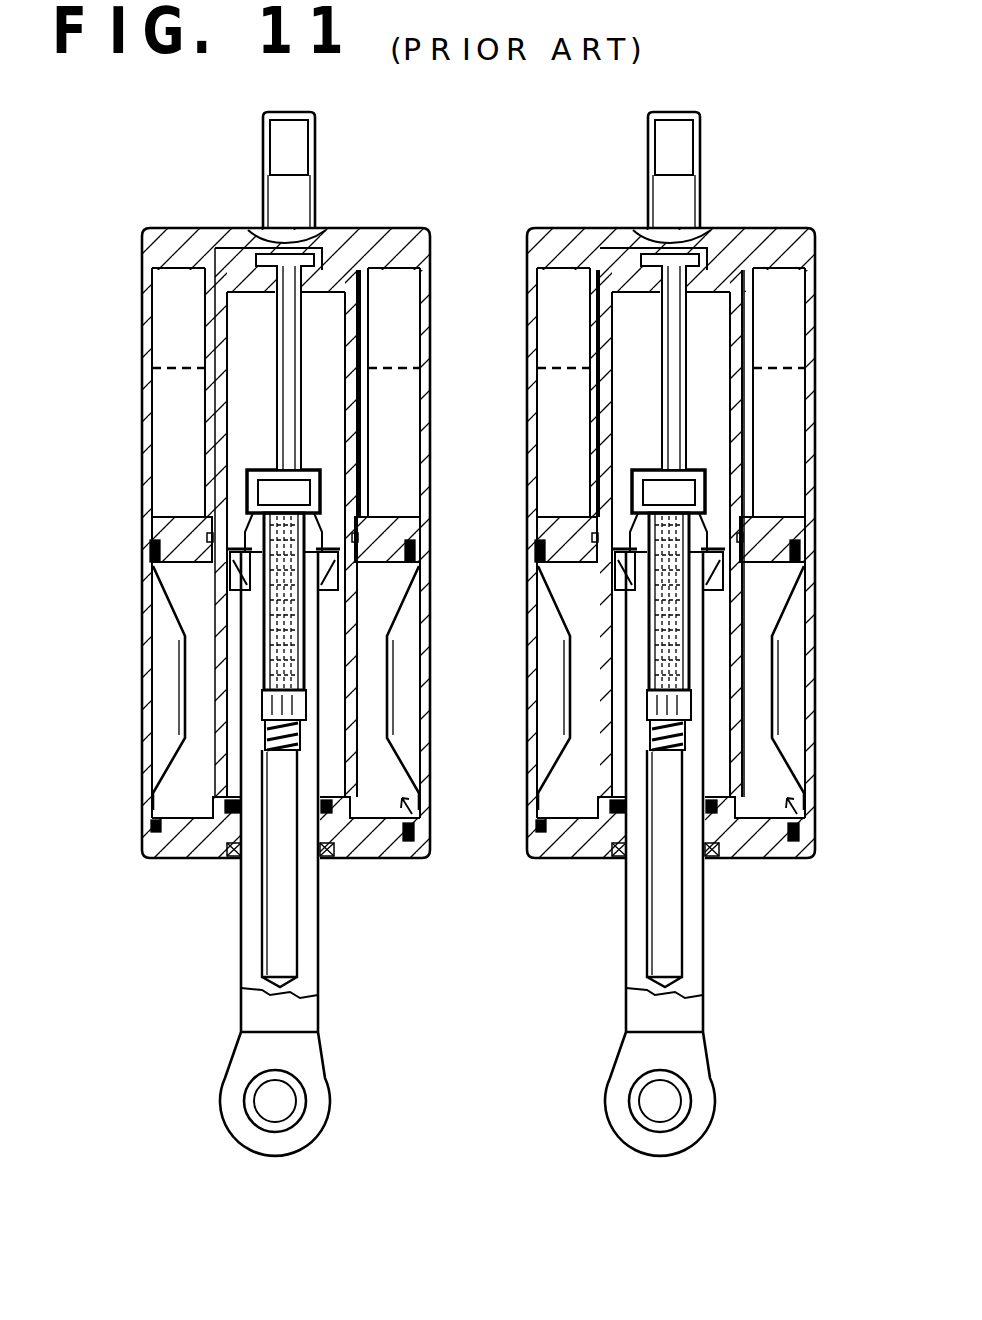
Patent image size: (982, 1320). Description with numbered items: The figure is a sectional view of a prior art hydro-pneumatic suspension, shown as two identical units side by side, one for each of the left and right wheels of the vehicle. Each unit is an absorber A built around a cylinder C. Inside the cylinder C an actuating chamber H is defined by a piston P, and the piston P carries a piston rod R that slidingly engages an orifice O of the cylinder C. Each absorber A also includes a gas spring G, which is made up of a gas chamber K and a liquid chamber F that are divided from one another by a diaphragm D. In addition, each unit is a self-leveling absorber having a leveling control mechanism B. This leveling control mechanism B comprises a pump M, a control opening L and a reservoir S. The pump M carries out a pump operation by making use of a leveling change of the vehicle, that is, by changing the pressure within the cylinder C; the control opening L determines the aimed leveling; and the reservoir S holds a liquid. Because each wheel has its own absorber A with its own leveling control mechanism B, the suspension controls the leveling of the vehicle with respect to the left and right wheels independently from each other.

The leveling control mechanism B is at (563, 938).
The cylinder C is at (748, 362).
The reservoir S is at (776, 415).
The control opening L is at (682, 462).
The actuating chamber H is at (640, 406).
The absorber A is at (512, 483).
The orifice O is at (606, 521).
The piston P is at (624, 572).
The diaphragm D is at (548, 654).
The gas chamber K is at (548, 693).
The piston rod R is at (640, 738).
The liquid chamber F is at (575, 798).
The gas spring G is at (530, 826).
The pump M is at (660, 930).